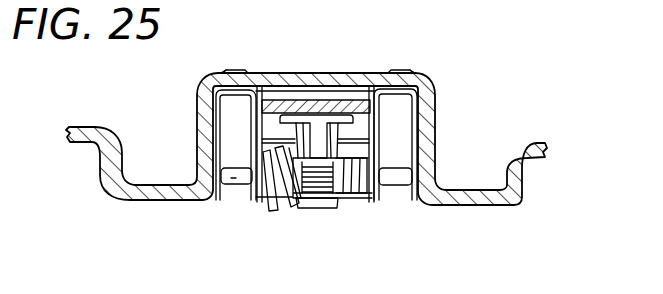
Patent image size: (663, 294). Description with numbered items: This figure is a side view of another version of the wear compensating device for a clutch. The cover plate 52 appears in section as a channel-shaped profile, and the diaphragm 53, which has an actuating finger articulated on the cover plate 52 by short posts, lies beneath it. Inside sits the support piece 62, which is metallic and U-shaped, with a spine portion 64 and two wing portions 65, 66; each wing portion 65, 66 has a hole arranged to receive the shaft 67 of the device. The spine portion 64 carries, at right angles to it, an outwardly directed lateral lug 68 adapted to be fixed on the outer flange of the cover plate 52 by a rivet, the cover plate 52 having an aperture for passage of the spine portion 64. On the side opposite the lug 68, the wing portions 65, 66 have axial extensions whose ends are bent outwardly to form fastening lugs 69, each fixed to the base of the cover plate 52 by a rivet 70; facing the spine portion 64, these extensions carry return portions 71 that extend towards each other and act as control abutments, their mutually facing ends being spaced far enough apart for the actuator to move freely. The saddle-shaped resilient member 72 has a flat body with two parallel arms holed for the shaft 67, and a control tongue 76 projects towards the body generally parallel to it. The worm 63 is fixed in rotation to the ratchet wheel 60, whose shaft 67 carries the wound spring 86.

The cover plate 52 is at (445, 140).
The diaphragm 53 is at (334, 100).
The ratchet wheel 60 is at (305, 200).
The support piece 62 is at (386, 128).
The worm 63 is at (270, 212).
The spine portion 64 is at (262, 145).
The wing portion 65 is at (255, 198).
The wing portion 66 is at (377, 198).
The shaft 67 is at (402, 180).
The lateral lug 68 is at (318, 209).
The fastening lug 69 is at (224, 72).
The rivet 70 is at (236, 70).
The return portion 71 is at (270, 85).
The resilient member 72 is at (298, 108).
The control tongue 76 is at (330, 205).
The spring 86 is at (350, 200).